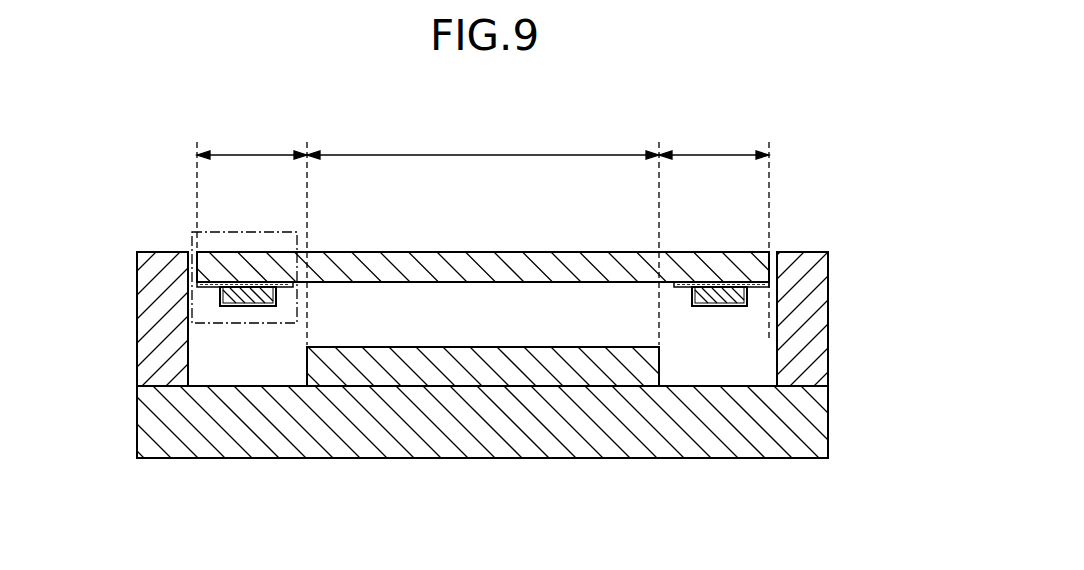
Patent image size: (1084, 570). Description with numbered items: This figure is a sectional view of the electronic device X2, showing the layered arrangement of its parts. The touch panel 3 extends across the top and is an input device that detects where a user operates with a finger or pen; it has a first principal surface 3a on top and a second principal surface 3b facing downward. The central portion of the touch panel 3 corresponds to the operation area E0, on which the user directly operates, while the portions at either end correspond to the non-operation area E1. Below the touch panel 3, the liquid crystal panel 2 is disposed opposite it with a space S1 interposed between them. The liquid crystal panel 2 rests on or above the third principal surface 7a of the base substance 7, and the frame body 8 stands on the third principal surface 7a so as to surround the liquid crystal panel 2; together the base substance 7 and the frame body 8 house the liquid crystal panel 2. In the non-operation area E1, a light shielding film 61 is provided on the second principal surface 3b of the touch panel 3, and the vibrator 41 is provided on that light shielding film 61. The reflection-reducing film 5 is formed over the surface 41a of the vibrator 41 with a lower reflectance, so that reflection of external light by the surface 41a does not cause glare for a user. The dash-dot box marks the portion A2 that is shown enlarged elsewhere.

The liquid crystal panel 2 is at (532, 372).
The touch panel 3 is at (350, 262).
The first principal surface 3a is at (393, 252).
The second principal surface 3b is at (412, 283).
The reflection-reducing film 5 is at (232, 311).
The base substance 7 is at (475, 447).
The third principal surface 7a is at (243, 377).
The frame body 8 is at (147, 320).
The vibrator 41 is at (252, 294).
The surface of the vibrator 41a is at (220, 292).
The light shielding film 61 is at (222, 284).
The portion A2 is at (203, 232).
The space S1 is at (570, 317).
The electronic device X2 is at (804, 149).
The operation area E0 is at (483, 237).
The non-operation area E1 is at (483, 235).